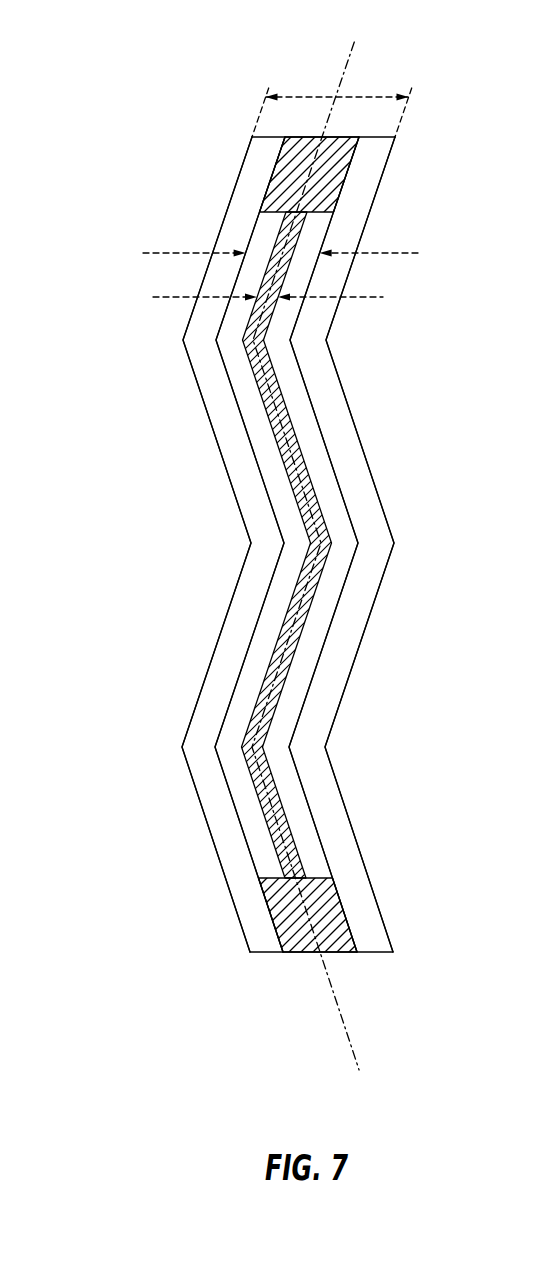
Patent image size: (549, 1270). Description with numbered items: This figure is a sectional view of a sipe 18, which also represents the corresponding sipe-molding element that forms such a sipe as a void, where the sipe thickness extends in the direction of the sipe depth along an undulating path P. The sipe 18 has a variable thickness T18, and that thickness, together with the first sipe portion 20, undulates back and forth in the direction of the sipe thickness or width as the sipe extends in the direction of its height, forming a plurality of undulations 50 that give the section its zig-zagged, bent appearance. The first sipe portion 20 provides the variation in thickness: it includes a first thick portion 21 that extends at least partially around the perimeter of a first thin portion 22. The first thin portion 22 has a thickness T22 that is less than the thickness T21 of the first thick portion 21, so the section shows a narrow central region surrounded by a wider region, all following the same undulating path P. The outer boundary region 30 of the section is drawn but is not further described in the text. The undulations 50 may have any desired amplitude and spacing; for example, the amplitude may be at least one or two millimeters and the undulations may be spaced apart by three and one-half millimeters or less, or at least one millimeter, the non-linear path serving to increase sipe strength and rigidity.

The sipe 18 is at (130, 62).
The first sipe portion 20 is at (301, 544).
The first thick portion 21 is at (302, 377).
The first thin portion 22 is at (293, 430).
The outer layer 30 is at (385, 167).
The undulations 50 is at (183, 340).
The undulating path P is at (348, 55).
The thickness of sipe T18 is at (373, 96).
The thickness of first thick portion T21 is at (403, 253).
The thickness of first thin portion T22 is at (363, 297).